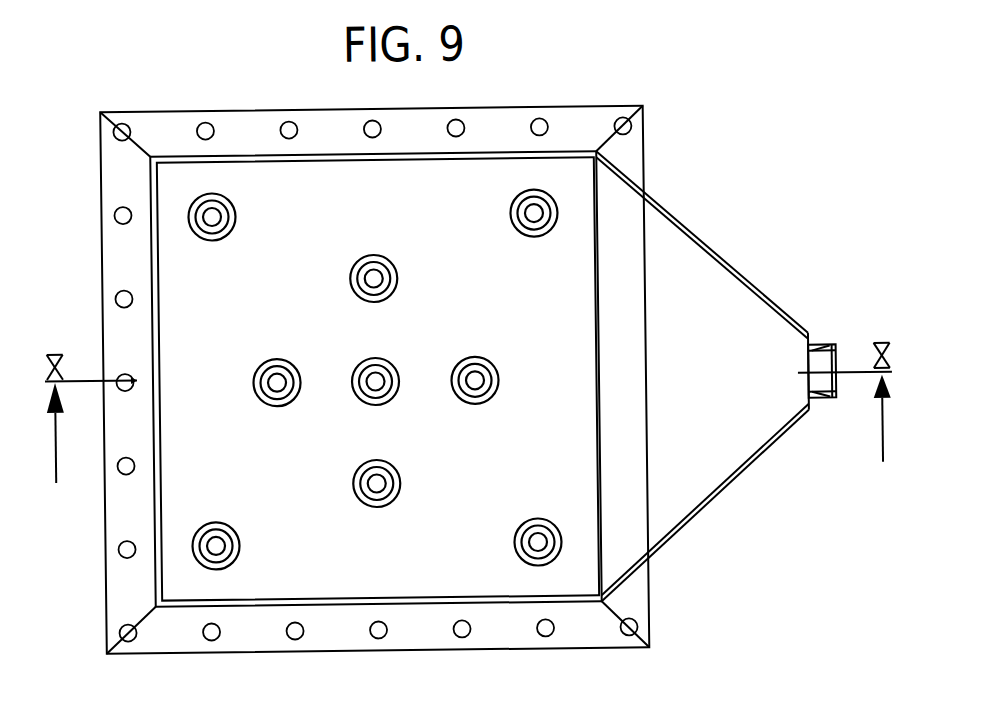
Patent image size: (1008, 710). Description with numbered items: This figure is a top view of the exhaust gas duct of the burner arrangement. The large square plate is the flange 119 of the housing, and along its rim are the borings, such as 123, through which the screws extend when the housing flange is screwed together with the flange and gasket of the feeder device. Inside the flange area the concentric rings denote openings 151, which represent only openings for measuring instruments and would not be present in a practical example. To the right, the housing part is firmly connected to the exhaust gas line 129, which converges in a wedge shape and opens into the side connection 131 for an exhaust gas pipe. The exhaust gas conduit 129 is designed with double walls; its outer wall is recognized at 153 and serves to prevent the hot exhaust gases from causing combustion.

The flange 119 is at (104, 178).
The boring 123 is at (118, 298).
The opening for measuring instruments 151 is at (222, 216).
The exhaust gas line 129 is at (712, 252).
The outer wall 153 is at (732, 483).
The side connection 131 is at (825, 404).